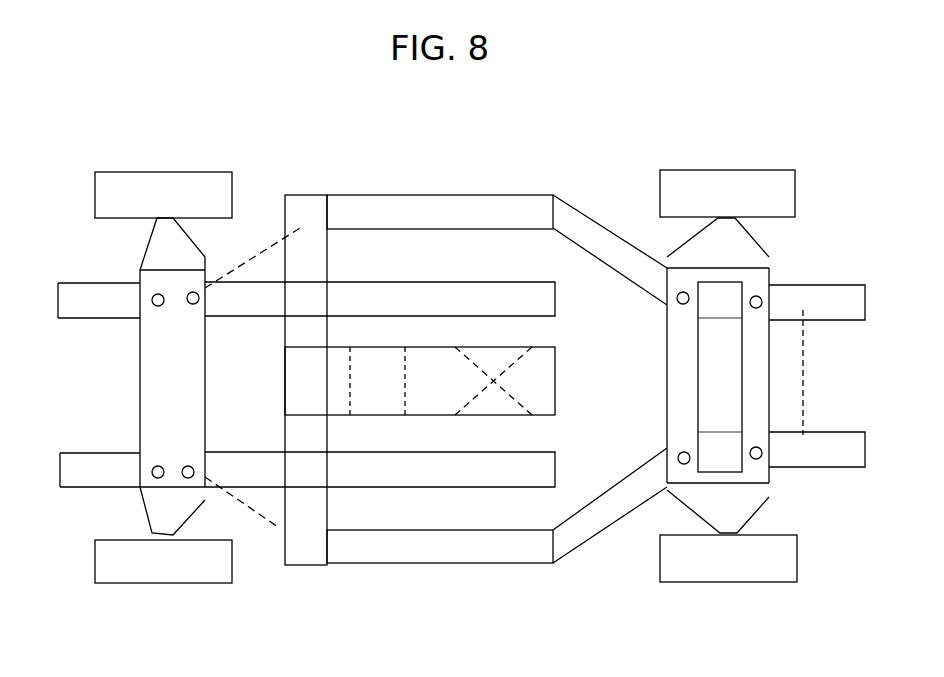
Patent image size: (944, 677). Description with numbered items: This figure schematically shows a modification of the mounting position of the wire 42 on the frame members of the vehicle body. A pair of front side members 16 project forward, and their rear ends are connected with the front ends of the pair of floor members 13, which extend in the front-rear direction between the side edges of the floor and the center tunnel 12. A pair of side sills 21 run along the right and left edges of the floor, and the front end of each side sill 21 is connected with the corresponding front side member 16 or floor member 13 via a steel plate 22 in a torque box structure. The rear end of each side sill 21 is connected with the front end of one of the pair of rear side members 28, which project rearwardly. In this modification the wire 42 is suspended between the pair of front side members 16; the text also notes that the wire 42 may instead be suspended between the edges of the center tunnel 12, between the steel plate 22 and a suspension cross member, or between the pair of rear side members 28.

The center tunnel 12 is at (305, 392).
The floor member 13 is at (492, 280).
The front side member 16 is at (80, 283).
The side sill 21 is at (442, 195).
The steel plate 22 is at (307, 195).
The rear side member 28 is at (617, 232).
The wire 42 is at (273, 247).